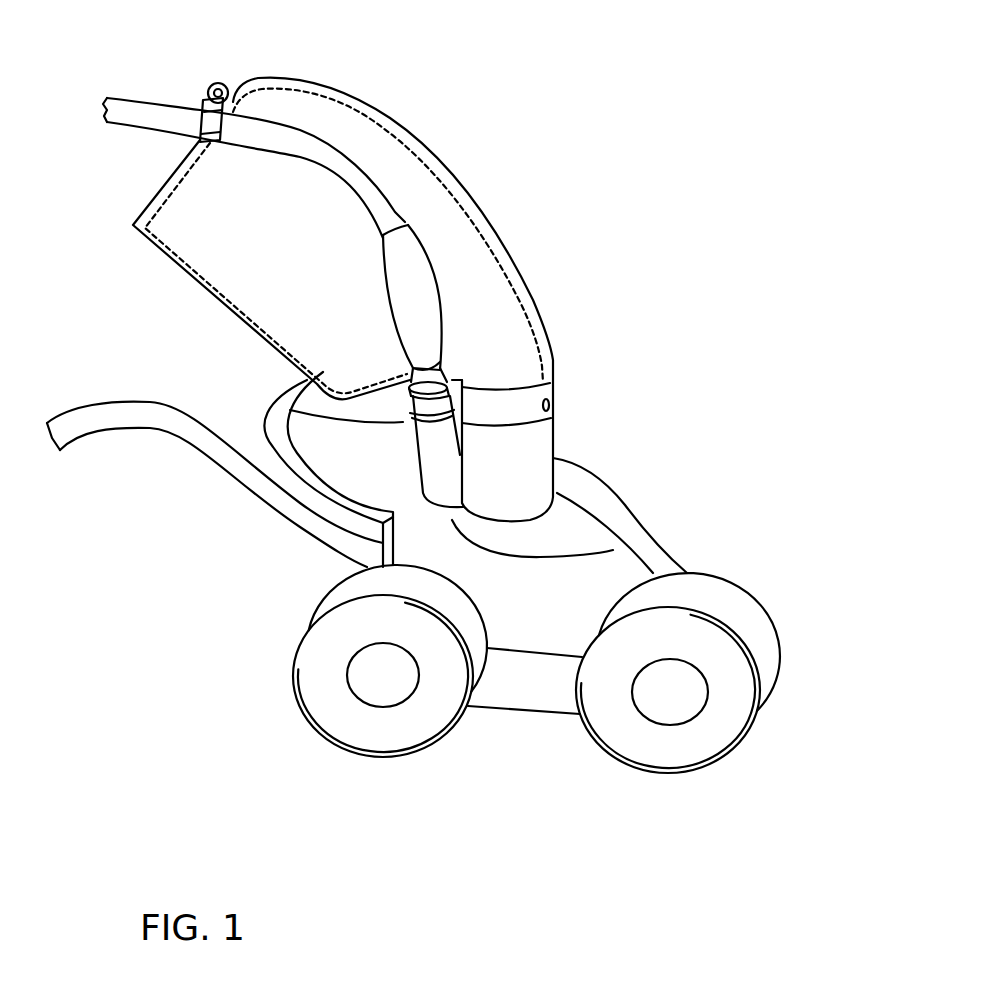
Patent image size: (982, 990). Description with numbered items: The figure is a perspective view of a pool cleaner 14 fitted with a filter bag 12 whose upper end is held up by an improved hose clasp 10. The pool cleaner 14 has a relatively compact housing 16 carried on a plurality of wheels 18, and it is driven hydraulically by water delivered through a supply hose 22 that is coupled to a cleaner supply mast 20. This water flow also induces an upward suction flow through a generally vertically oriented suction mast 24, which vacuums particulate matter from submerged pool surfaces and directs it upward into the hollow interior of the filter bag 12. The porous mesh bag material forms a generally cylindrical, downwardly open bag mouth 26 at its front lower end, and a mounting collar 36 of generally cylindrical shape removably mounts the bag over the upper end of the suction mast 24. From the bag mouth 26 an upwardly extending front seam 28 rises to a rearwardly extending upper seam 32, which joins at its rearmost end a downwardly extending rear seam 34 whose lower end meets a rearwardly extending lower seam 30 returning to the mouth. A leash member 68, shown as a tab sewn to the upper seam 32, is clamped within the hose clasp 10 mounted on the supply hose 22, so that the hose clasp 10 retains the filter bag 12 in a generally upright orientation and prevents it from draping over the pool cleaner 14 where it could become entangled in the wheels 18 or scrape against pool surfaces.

The hose clasp 10 is at (187, 73).
The filter bag 12 is at (463, 247).
The pool cleaner 14 is at (518, 730).
The housing 16 is at (580, 535).
The wheels 18 is at (737, 653).
The cleaner supply mast 20 is at (432, 440).
The supply hose 22 is at (138, 117).
The suction mast 24 is at (537, 477).
The bag mouth 26 is at (523, 363).
The front seam 28 is at (523, 280).
The lower seam 30 is at (392, 383).
The upper seam 32 is at (195, 160).
The rear seam 34 is at (247, 313).
The mounting collar 36 is at (551, 403).
The leash member 68 is at (233, 92).